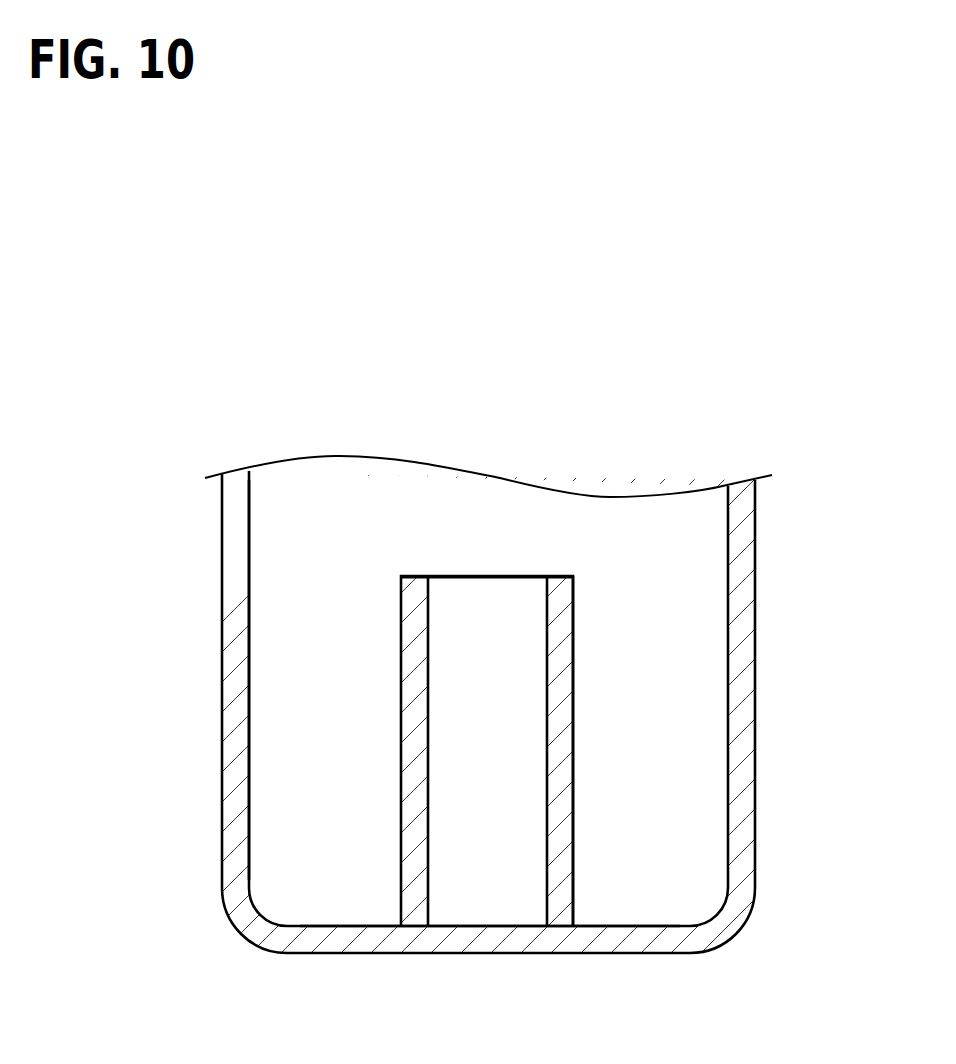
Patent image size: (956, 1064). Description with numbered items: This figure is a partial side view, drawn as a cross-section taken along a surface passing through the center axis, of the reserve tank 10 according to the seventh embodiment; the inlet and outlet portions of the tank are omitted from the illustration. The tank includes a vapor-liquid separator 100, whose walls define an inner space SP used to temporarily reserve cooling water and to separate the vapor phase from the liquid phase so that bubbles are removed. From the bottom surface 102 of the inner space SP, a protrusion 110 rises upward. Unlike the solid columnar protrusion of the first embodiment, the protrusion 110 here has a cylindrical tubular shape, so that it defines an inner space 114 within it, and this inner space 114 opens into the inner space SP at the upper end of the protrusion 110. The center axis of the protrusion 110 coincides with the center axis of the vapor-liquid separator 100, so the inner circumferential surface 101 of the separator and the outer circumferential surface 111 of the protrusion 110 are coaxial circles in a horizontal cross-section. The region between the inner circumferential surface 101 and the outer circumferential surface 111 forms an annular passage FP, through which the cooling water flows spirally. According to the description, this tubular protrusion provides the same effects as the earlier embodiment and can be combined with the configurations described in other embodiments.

The reserve tank 10 is at (790, 515).
The vapor-liquid separator 100 is at (757, 549).
The inner circumferential surface 101 is at (249, 630).
The bottom surface 102 is at (674, 926).
The protrusion 110 is at (562, 648).
The outer circumferential surface 111 is at (575, 705).
The inner space 114 is at (450, 820).
The inner space SP is at (270, 522).
The annular passage FP is at (270, 815).